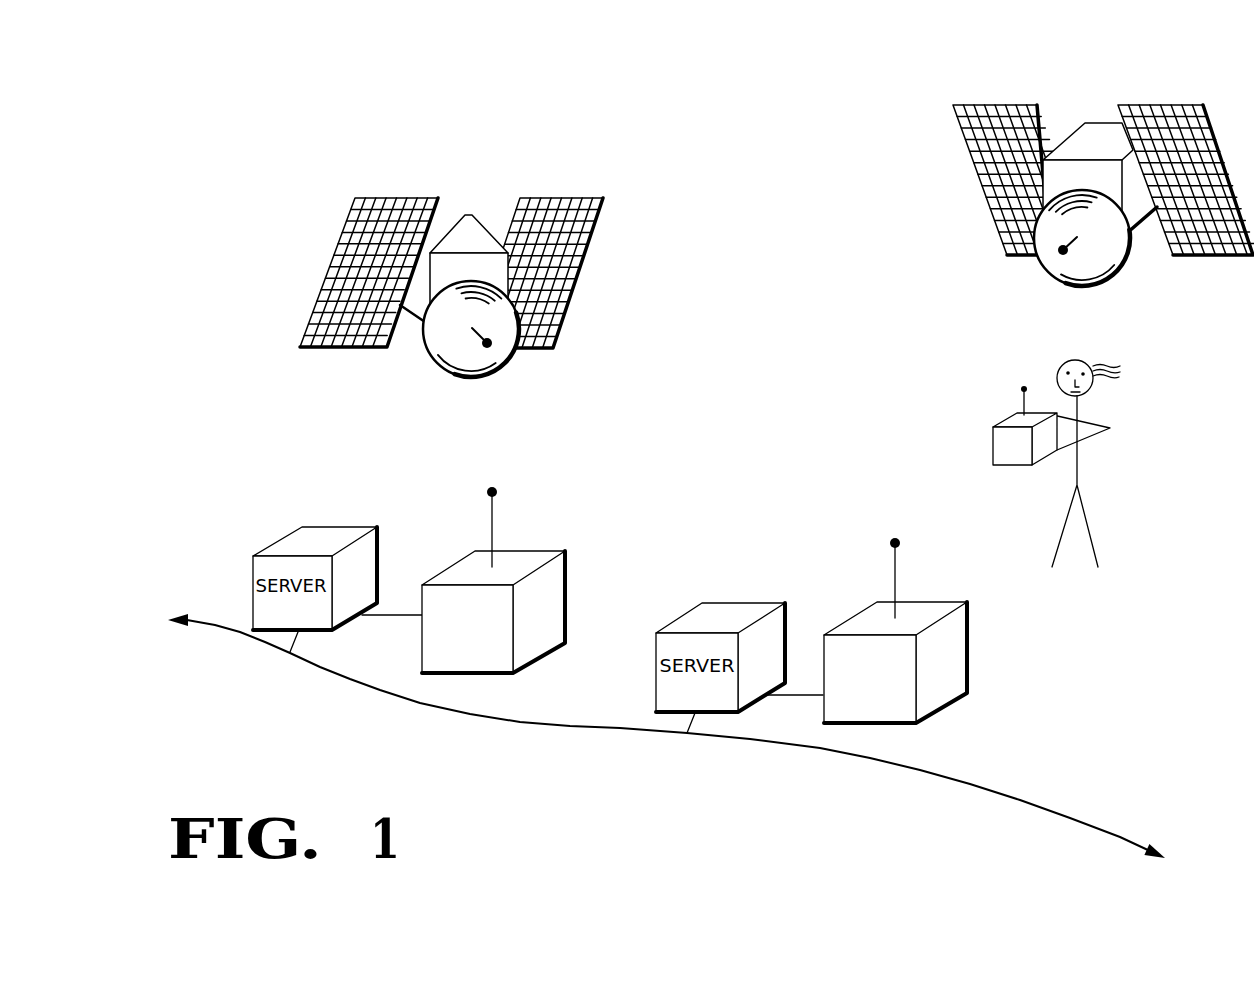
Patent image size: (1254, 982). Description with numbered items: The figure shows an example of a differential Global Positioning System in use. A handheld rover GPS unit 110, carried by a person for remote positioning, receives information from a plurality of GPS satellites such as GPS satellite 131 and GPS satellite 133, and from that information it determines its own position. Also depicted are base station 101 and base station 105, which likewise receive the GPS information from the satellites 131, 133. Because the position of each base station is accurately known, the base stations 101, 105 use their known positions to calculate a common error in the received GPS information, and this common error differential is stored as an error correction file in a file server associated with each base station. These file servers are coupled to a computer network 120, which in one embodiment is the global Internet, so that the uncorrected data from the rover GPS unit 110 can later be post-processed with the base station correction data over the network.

The GPS satellite 131 is at (464, 222).
The GPS satellite 133 is at (1107, 130).
The handheld rover GPS unit 110 is at (997, 438).
The base station 105 is at (507, 665).
The base station 101 is at (908, 715).
The computer network 120 is at (605, 730).